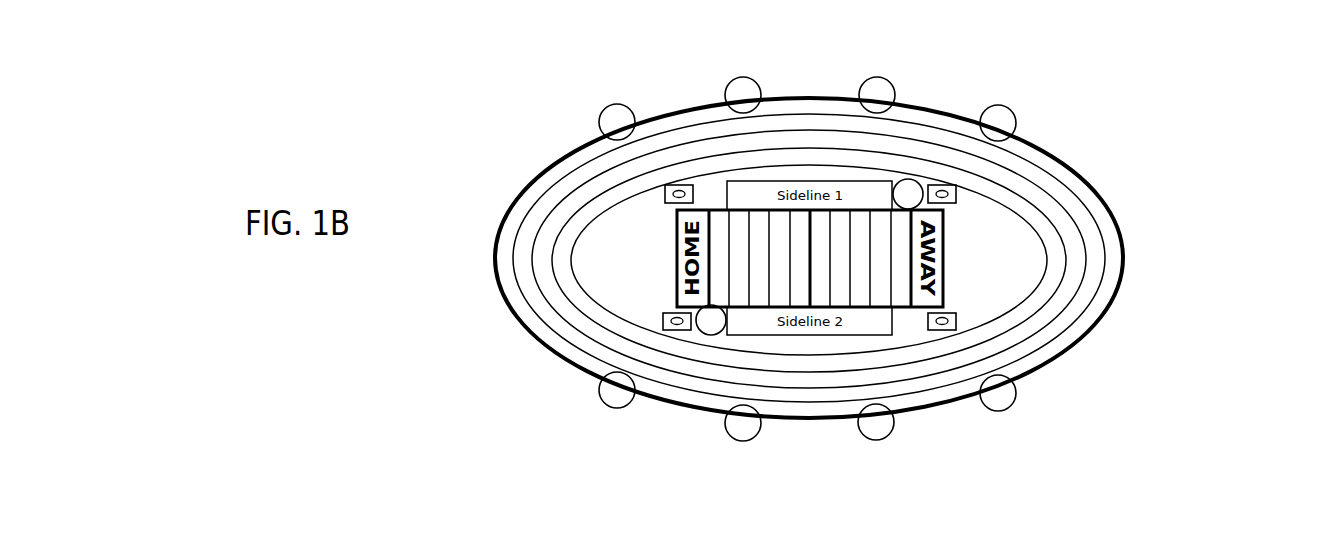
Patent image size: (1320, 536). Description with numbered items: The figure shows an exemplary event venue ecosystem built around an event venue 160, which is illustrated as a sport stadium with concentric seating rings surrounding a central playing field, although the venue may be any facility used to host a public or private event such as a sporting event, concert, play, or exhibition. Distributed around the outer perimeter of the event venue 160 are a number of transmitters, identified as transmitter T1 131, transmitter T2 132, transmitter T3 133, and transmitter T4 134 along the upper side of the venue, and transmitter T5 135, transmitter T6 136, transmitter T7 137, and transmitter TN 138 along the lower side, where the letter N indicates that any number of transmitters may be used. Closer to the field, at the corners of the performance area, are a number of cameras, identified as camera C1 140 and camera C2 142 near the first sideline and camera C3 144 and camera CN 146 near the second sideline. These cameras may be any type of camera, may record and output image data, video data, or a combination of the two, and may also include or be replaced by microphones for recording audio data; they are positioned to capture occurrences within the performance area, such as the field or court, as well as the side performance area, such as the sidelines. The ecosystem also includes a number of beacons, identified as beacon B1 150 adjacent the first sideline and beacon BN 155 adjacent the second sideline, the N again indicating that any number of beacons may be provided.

The event venue 160 is at (452, 148).
The transmitter T1 131 is at (615, 110).
The transmitter T2 132 is at (742, 83).
The transmitter T3 133 is at (873, 83).
The transmitter T4 134 is at (997, 112).
The transmitter T5 135 is at (618, 407).
The transmitter T6 136 is at (757, 432).
The transmitter T7 137 is at (887, 438).
The transmitter TN 138 is at (1005, 402).
The camera C1 140 is at (665, 190).
The camera C2 142 is at (956, 195).
The camera C3 144 is at (663, 326).
The camera CN 146 is at (956, 322).
The beacon B1 150 is at (921, 186).
The beacon BN 155 is at (700, 331).